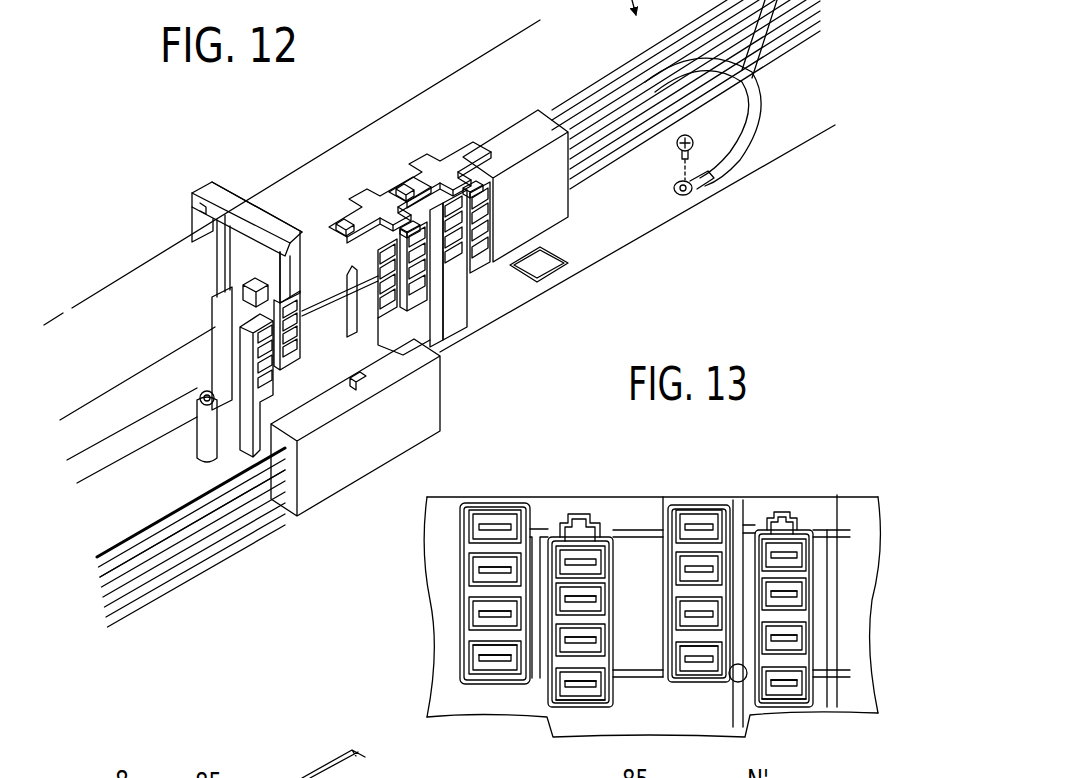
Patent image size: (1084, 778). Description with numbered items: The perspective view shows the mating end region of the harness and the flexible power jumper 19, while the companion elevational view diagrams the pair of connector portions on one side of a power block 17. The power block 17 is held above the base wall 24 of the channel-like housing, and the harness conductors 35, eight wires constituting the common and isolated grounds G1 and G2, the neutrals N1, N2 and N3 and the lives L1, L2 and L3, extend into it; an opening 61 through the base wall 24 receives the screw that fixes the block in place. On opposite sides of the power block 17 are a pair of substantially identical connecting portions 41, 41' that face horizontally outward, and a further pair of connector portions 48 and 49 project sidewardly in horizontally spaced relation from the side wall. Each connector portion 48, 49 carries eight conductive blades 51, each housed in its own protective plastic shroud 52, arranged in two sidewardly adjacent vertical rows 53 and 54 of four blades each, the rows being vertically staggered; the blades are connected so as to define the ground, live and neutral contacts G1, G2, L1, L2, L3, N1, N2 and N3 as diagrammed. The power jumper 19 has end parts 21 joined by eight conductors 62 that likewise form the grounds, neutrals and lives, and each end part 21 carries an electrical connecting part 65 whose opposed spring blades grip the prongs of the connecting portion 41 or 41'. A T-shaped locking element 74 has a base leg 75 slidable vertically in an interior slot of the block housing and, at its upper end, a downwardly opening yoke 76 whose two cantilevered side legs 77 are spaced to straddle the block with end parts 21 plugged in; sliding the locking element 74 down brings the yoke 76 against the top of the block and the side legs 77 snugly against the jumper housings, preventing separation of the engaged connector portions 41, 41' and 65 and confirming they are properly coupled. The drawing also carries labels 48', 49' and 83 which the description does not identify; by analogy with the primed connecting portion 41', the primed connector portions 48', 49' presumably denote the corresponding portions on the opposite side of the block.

In FIG. 12, the power block 17 is at (478, 128).
In FIG. 12, the power jumper 19 is at (226, 566).
In FIG. 12, the end part 21 is at (340, 505).
In FIG. 12, the base wall 24 is at (650, 214).
In FIG. 12, the conductor 35 is at (607, 108).
In FIG. 12, the electrical connecting portion 41 is at (174, 374).
In FIG. 12, the electrical connecting portion 41' is at (213, 367).
In FIG. 12, the electrical connector portion 48 is at (511, 263).
In FIG. 13, the electrical connector portion 48 is at (652, 561).
In FIG. 12, the cross mounting member 48' is at (440, 158).
In FIG. 12, the electrical connector portion 49 is at (447, 297).
In FIG. 13, the electrical connector portion 49 is at (545, 549).
In FIG. 12, the cross mounting member 49' is at (380, 188).
In FIG. 13, the conductive blade 51 is at (501, 662).
In FIG. 13, the protective plastic shroud 52 is at (600, 540).
In FIG. 13, the vertically extending row 53 is at (511, 667).
In FIG. 13, the vertically extending row 54 is at (593, 699).
In FIG. 13, the opening 61 is at (692, 522).
In FIG. 12, the conductor 62 is at (192, 555).
In FIG. 13, the conductor 62 is at (800, 545).
In FIG. 12, the electrical connecting part 65 is at (360, 374).
In FIG. 12, the locking element 74 is at (268, 207).
In FIG. 12, the base leg 75 is at (216, 268).
In FIG. 12, the U-shaped yoke 76 is at (220, 192).
In FIG. 12, the side leg 77 is at (192, 232).
In FIG. 12, the connector 83 is at (280, 776).
In FIG. 13, the ground conductor G1 is at (487, 522).
In FIG. 13, the ground conductor G2 is at (566, 558).
In FIG. 13, the live conductor L1 is at (483, 567).
In FIG. 13, the live conductor L2 is at (480, 612).
In FIG. 13, the live conductor L3 is at (480, 657).
In FIG. 13, the neutral conductor N1 is at (592, 598).
In FIG. 13, the neutral conductor N2 is at (592, 640).
In FIG. 13, the neutral conductor N3 is at (592, 686).